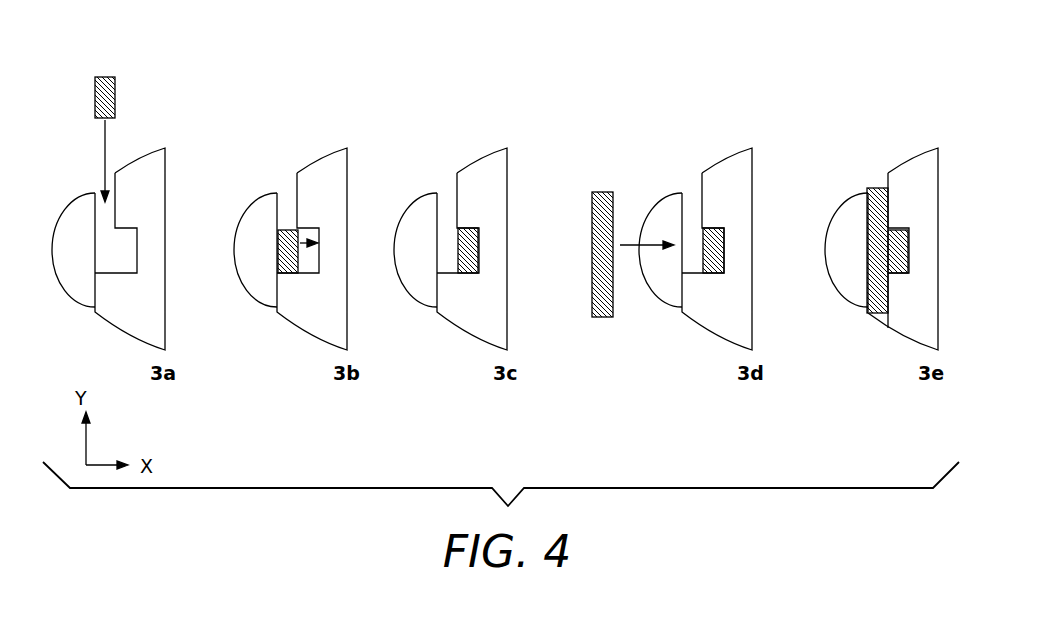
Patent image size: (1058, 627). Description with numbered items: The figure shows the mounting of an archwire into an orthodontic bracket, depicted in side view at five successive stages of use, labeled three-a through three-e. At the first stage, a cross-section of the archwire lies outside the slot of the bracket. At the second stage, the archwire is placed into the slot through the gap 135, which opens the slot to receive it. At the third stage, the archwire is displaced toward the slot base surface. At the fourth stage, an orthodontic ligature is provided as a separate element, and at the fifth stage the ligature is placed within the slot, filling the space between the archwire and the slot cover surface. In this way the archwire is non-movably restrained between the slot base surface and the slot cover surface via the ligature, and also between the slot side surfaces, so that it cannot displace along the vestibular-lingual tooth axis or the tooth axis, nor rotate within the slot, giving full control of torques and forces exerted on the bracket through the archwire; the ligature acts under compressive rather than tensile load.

The gap 135 is at (287, 225).